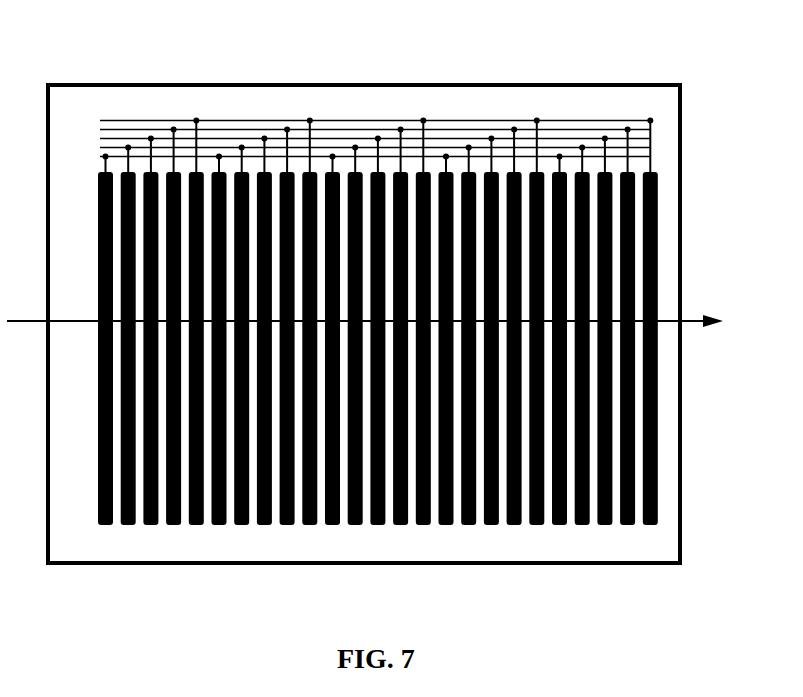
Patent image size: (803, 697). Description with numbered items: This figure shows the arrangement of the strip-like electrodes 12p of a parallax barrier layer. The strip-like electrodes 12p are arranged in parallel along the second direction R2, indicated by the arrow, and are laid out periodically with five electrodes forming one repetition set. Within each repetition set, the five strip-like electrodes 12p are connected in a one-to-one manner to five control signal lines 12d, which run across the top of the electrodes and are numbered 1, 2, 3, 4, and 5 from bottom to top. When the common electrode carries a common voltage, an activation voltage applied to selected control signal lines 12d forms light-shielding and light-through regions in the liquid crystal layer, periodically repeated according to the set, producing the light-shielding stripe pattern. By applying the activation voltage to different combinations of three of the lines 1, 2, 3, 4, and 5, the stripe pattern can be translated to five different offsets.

The strip-like electrodes 12p is at (146, 523).
The control signal lines 12d is at (372, 92).
The control signal line 1 is at (361, 156).
The control signal line 2 is at (386, 147).
The control signal line 3 is at (361, 138).
The control signal line 4 is at (386, 129).
The control signal line 5 is at (361, 120).
The second direction R2 is at (384, 320).